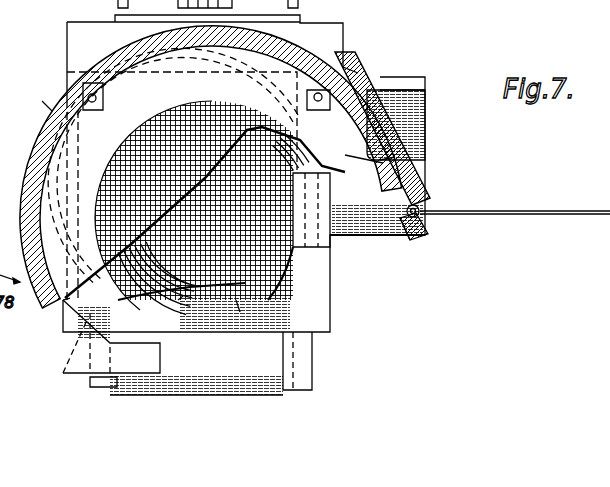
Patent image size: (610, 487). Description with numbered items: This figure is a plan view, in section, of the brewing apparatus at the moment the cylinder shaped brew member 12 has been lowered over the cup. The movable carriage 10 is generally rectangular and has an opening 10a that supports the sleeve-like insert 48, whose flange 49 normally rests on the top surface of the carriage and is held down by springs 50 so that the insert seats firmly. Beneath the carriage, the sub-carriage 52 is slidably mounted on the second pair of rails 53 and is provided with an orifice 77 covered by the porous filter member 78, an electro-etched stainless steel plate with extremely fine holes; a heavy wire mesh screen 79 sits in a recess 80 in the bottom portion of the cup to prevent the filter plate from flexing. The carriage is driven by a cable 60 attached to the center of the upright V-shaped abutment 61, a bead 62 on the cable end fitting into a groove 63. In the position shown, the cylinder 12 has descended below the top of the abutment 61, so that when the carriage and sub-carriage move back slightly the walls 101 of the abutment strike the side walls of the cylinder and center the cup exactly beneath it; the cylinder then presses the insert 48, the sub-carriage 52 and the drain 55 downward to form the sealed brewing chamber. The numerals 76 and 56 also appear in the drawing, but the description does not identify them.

The movable carriage 10 is at (345, 35).
The opening 10a is at (32, 100).
The cylinder shaped brew member 12 is at (309, 56).
The springs 50 is at (73, 82).
The walls of the abutment 101 is at (395, 157).
The flange 49 is at (383, 163).
The sleeve-like insert 48 is at (408, 193).
The groove 63 is at (428, 224).
The cable 60 is at (532, 215).
The bead 62 is at (411, 230).
The upright V-shaped abutment 61 is at (427, 236).
The recess 80 is at (300, 262).
The heavy wire mesh screen 79 is at (275, 255).
The drain 55 is at (313, 293).
The sub-carriage 52 is at (330, 318).
The porous filter member 78 is at (183, 296).
The orifice 77 is at (240, 312).
The bearing 76 is at (67, 302).
The second pair of rails 53 is at (0, 350).
The knob 56 is at (298, 6).